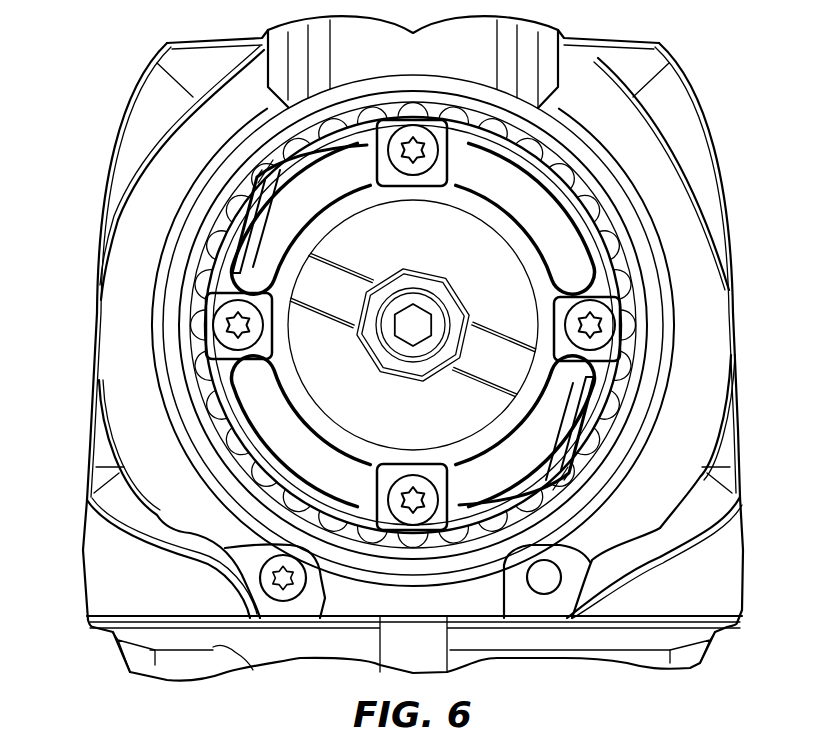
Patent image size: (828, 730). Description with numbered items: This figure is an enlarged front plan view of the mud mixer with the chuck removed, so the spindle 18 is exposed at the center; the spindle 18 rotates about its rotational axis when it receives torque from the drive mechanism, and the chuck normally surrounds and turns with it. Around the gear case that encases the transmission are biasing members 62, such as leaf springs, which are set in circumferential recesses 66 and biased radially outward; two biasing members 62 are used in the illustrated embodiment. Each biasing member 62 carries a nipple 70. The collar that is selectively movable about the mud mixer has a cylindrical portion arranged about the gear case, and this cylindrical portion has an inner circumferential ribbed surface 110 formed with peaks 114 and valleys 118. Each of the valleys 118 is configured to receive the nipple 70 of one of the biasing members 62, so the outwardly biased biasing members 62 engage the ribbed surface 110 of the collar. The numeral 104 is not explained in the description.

The spindle 18 is at (423, 303).
The biasing member 62 is at (593, 408).
The circumferential recess 66 is at (603, 372).
The nipple 70 is at (580, 485).
The base housing 104 is at (413, 613).
The inner circumferential ribbed surface 110 is at (500, 206).
The peaks 114 is at (217, 388).
The valleys 118 is at (233, 437).